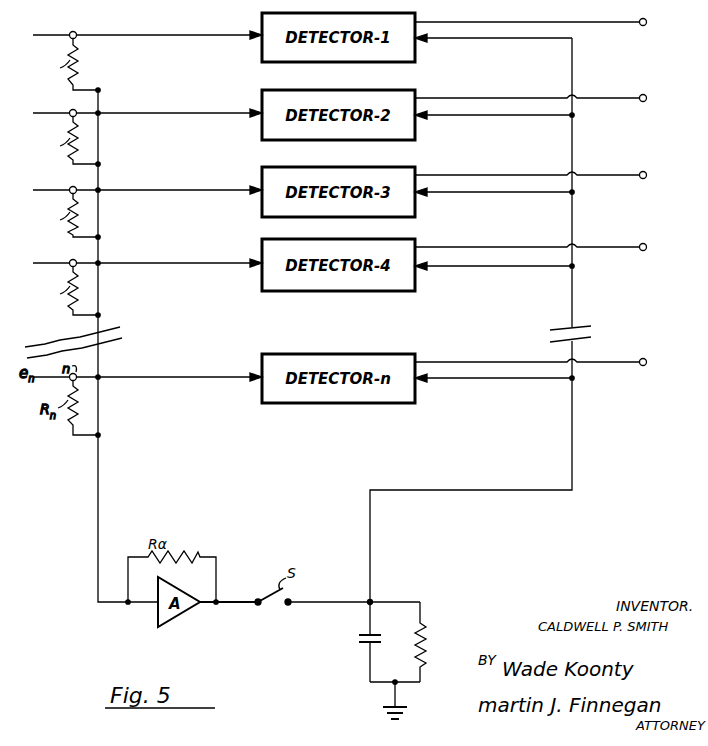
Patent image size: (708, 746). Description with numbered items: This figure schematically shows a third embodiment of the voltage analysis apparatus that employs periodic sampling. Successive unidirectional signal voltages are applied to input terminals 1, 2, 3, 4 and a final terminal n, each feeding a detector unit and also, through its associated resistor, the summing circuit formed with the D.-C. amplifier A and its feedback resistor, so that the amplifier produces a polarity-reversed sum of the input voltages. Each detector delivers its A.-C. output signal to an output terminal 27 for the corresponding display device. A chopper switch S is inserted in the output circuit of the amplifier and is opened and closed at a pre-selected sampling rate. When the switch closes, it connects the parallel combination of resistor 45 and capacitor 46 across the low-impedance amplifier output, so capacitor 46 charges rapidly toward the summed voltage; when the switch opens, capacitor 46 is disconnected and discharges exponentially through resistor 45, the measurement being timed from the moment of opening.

The input terminal 1 is at (76, 32).
The input terminal 2 is at (71, 109).
The input terminal 3 is at (71, 186).
The input terminal 4 is at (71, 259).
The output terminal 27 is at (658, 356).
The resistor 45 is at (426, 641).
The capacitor 46 is at (360, 638).